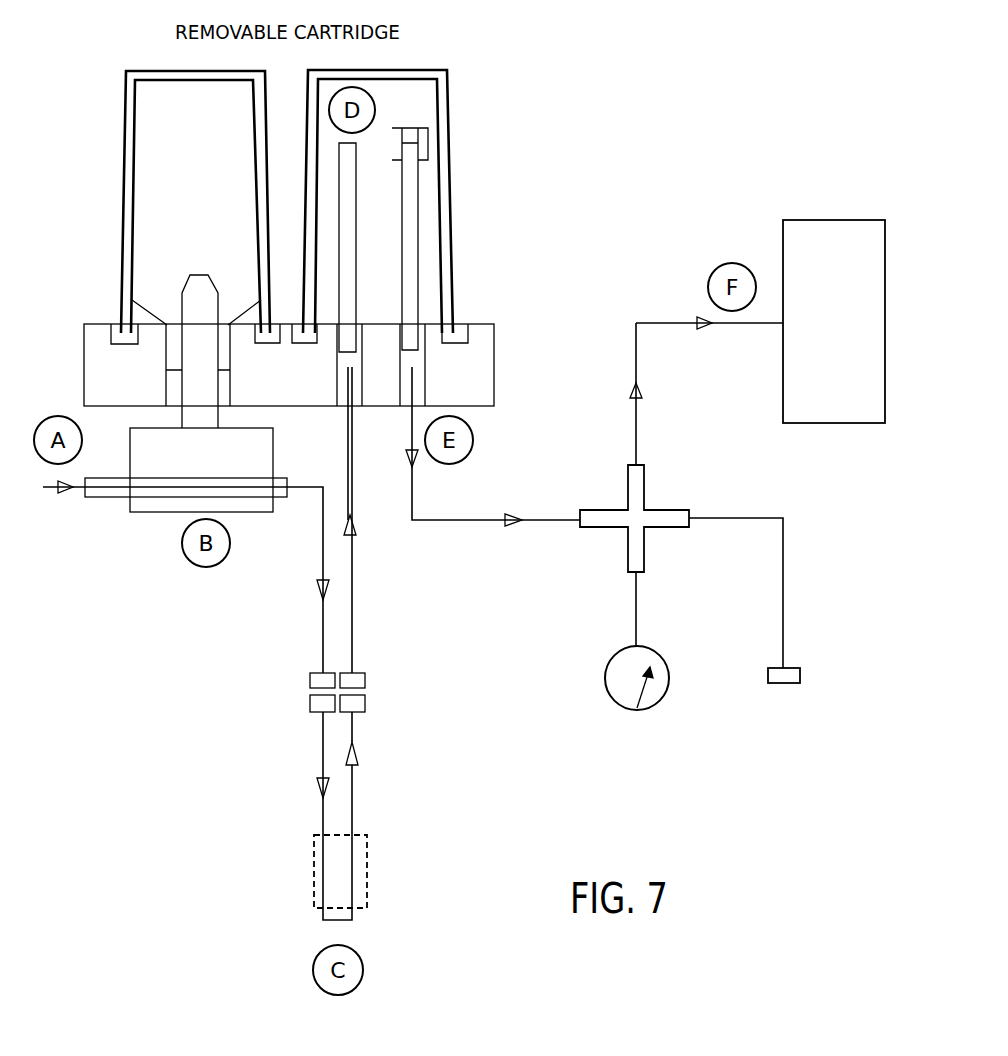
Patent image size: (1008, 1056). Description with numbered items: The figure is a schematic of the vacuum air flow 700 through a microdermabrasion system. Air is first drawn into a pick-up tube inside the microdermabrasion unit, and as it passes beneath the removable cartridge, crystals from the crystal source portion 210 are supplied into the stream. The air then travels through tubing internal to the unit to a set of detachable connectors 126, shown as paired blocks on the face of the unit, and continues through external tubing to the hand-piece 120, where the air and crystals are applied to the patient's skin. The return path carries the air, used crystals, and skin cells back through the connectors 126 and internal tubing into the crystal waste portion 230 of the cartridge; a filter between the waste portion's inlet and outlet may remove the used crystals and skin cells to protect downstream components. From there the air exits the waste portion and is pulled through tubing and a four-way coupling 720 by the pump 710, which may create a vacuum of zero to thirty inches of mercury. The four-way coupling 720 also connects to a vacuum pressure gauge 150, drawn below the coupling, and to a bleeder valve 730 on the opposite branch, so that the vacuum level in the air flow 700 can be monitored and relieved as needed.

The vacuum air flow 700 is at (586, 68).
The crystal source portion 210 is at (122, 200).
The crystal waste portion 230 is at (455, 263).
The pump 710 is at (818, 219).
The four-way coupling 720 is at (645, 488).
The bleeder valve 730 is at (790, 685).
The vacuum pressure gauge 150 is at (606, 668).
The detachable connectors 126 is at (296, 665).
The hand-piece 120 is at (368, 872).